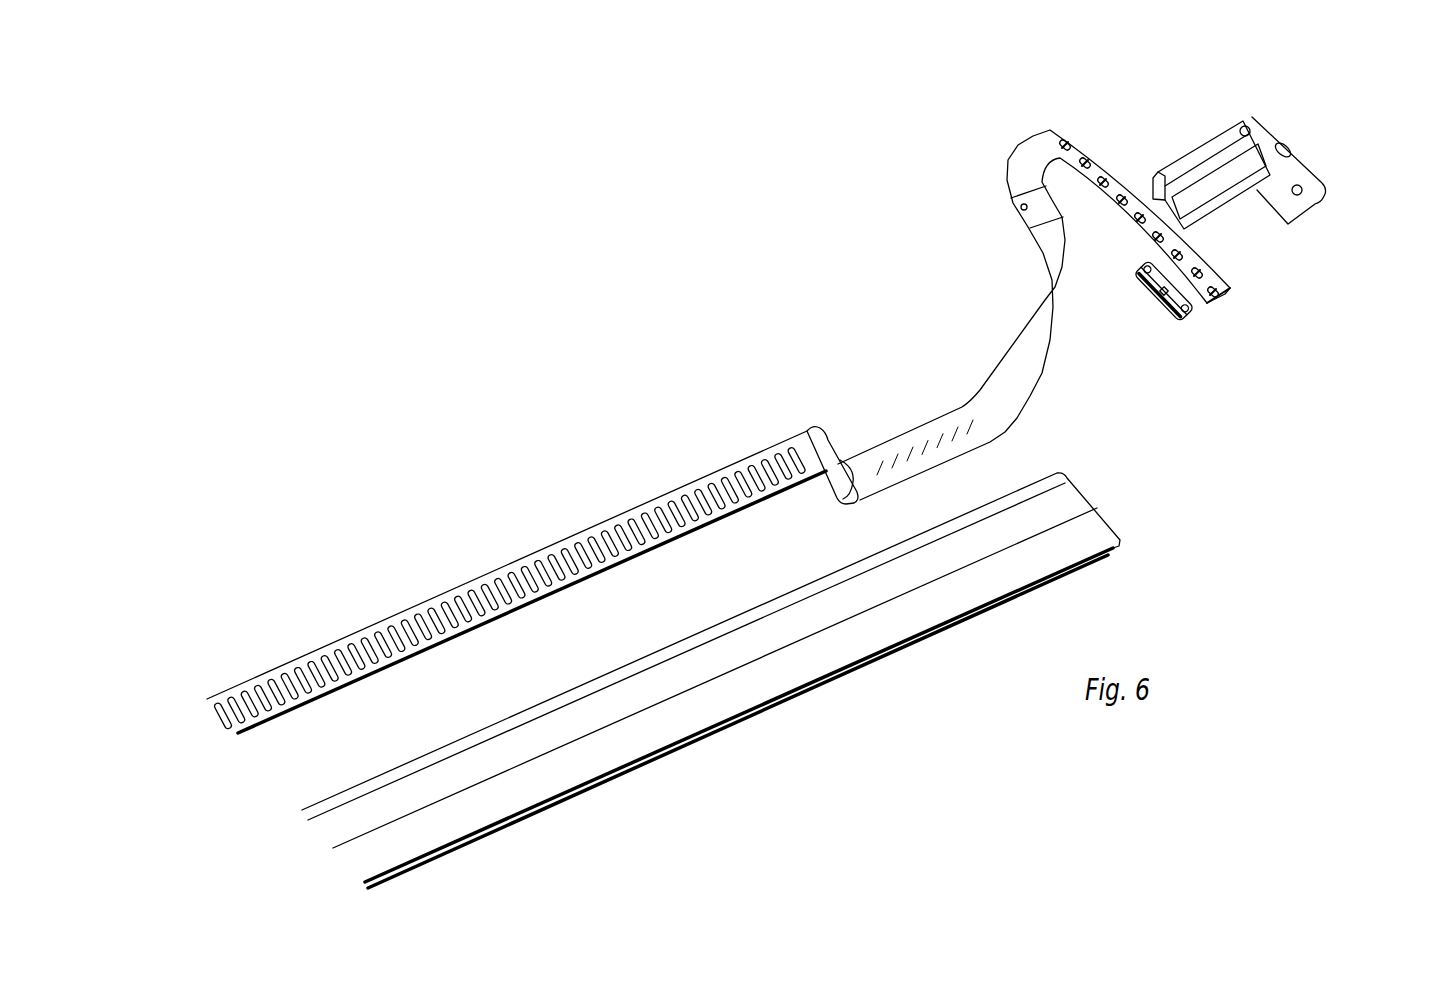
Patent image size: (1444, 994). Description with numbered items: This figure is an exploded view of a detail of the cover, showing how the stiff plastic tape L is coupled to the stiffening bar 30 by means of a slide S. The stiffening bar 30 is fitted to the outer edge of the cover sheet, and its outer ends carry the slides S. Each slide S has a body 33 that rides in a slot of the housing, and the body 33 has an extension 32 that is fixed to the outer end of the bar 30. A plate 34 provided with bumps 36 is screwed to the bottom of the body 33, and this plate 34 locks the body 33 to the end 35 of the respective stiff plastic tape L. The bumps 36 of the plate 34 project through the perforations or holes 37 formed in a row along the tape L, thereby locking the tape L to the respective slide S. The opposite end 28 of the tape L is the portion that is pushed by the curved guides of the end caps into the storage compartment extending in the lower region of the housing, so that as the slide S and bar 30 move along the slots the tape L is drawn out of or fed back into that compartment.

The end of the tape 28 is at (281, 639).
The stiffening bar 30 is at (927, 661).
The extensions 32 is at (1243, 235).
The bodies 33 is at (1348, 179).
The plate 34 is at (1159, 336).
The end of the tape 35 is at (1229, 320).
The bumps 36 is at (1138, 281).
The perforations or holes 37 is at (664, 493).
The stiff plastic tape L is at (578, 530).
The slides S is at (1290, 187).